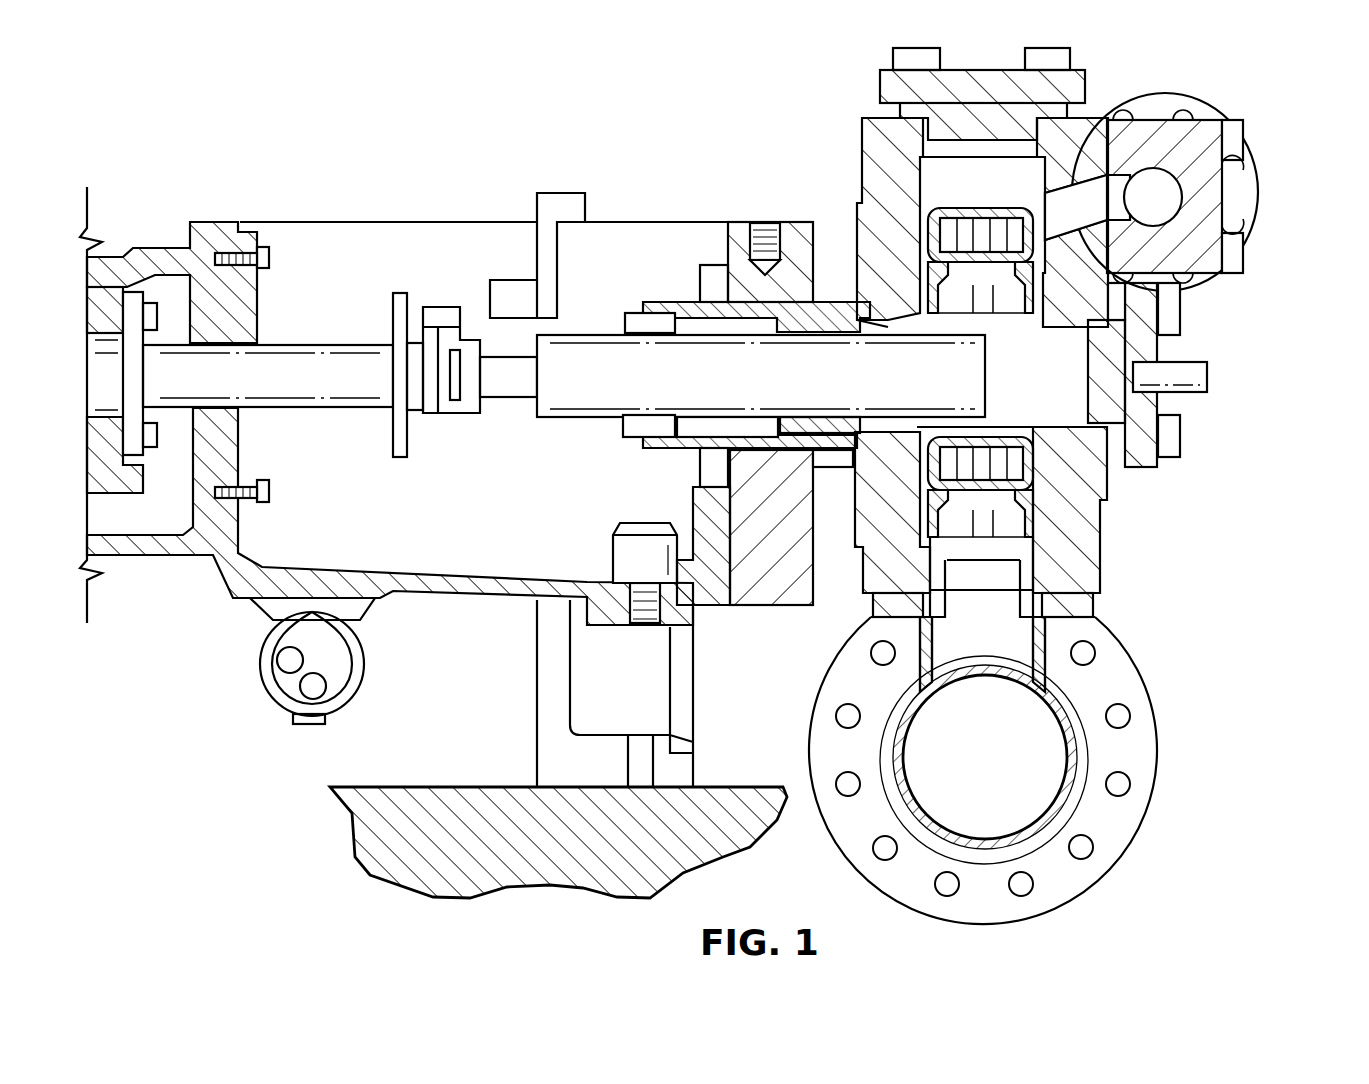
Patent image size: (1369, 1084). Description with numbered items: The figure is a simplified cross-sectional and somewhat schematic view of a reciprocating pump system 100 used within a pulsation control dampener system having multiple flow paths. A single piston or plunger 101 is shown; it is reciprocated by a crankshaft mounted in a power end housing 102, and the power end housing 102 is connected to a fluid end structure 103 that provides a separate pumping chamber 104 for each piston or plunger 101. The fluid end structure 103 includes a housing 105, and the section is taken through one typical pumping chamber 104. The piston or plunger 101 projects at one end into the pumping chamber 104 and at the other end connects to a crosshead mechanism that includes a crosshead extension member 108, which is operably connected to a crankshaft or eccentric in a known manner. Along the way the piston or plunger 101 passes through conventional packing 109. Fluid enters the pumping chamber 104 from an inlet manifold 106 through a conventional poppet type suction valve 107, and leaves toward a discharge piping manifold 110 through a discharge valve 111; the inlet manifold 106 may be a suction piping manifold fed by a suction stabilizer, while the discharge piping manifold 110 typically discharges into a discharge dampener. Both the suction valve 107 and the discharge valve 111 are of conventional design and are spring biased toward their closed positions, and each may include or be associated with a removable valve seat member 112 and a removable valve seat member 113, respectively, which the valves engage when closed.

The reciprocating pump system 100 is at (452, 112).
The piston or plunger 101 is at (577, 418).
The power end housing 102 is at (220, 577).
The fluid end structure 103 is at (1103, 551).
The pumping chamber 104 is at (1060, 391).
The housing 105 is at (857, 577).
The inlet manifold 106 is at (1067, 740).
The suction valve 107 is at (1000, 490).
The crosshead extension member 108 is at (327, 407).
The packing 109 is at (687, 312).
The discharge piping manifold 110 is at (1260, 197).
The discharge valve 111 is at (987, 180).
The valve seat member 112 is at (1030, 532).
The valve seat member 113 is at (938, 302).